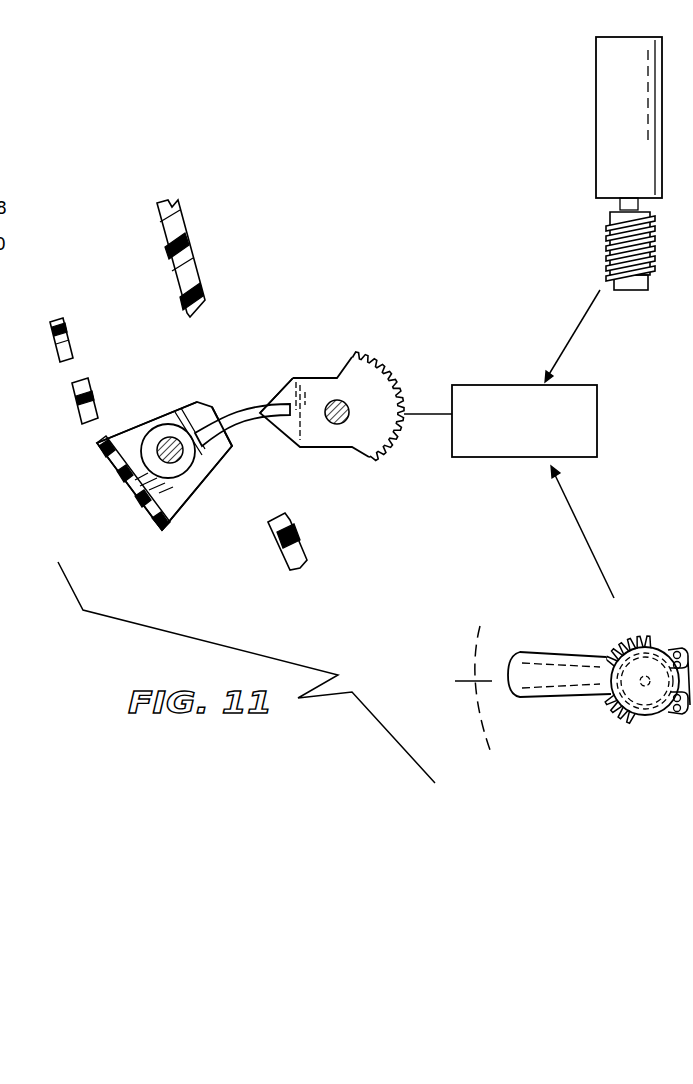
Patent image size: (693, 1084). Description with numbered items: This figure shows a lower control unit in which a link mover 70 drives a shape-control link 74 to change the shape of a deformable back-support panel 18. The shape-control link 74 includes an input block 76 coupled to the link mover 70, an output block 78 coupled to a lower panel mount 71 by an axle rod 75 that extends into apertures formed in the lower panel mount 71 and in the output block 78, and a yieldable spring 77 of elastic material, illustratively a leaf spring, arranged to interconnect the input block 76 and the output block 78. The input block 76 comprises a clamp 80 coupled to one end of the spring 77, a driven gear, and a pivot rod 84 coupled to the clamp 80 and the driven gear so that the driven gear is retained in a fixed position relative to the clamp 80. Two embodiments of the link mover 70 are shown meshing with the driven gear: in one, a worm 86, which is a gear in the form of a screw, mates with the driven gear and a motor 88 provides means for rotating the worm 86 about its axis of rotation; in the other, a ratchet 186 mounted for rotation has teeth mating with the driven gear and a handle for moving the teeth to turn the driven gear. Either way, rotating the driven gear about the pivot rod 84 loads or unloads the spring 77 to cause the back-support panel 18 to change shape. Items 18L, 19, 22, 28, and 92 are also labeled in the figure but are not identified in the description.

The back-support panel 18 is at (74, 335).
The lower clamp portion 18L is at (114, 499).
The clamp plate 19 is at (105, 431).
The clamp segment 22 is at (193, 250).
The clamp segment 28 is at (58, 310).
The link mover 70 is at (601, 421).
The lower panel mount 71 is at (149, 445).
The shape-control link 74 is at (185, 388).
The axle rod 75 is at (170, 447).
The input block 76 is at (330, 405).
The yieldable spring 77 is at (240, 404).
The output block 78 is at (232, 453).
The clamp 80 is at (278, 390).
The pivot rod 84 is at (336, 400).
The worm 86 is at (605, 236).
The motor 88 is at (596, 140).
The gear teeth 92 is at (362, 378).
The ratchet 186 is at (558, 710).